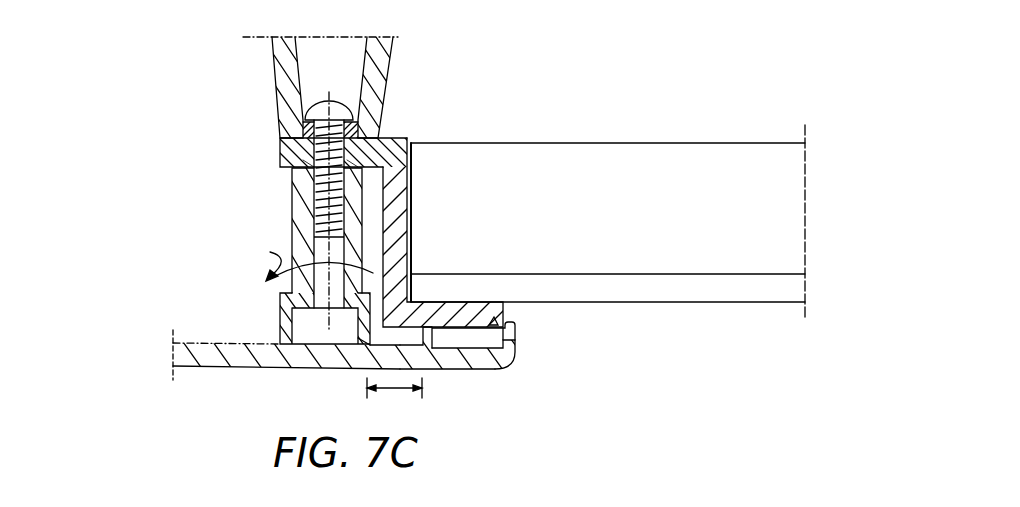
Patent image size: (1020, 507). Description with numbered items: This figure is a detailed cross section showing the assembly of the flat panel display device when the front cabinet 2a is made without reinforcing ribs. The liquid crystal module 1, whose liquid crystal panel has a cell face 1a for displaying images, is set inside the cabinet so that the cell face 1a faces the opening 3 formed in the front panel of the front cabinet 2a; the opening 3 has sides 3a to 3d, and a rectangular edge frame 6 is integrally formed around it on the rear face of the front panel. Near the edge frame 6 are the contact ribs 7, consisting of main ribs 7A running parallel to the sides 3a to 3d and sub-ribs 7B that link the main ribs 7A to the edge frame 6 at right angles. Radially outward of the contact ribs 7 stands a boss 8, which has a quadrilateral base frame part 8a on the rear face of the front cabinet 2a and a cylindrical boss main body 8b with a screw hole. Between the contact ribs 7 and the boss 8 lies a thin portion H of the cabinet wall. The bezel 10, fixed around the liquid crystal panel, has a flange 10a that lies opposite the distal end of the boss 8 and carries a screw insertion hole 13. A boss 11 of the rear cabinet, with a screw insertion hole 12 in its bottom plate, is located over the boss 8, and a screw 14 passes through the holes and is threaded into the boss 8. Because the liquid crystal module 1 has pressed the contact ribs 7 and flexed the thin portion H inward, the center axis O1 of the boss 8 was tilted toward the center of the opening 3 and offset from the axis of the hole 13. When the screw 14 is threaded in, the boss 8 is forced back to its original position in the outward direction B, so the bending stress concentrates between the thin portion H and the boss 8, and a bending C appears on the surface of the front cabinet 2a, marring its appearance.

The liquid crystal module 1 is at (692, 158).
The cell face 1a is at (686, 303).
The front cabinet 2a is at (183, 353).
The opening 3 is at (580, 254).
The side of the opening 3a is at (580, 254).
The side of the opening 3d is at (506, 323).
The rectangular edge frame 6 is at (517, 338).
The contact ribs 7 is at (500, 392).
The main ribs 7A is at (432, 330).
The sub-ribs 7B is at (490, 370).
The bosses 8 is at (260, 256).
The base frame part 8a is at (280, 317).
The boss main body 8b is at (293, 200).
The bezel 10 is at (463, 310).
The flanges 10a is at (280, 150).
The bosses 11 is at (275, 66).
The screw insertion hole 12 is at (305, 129).
The screw insertion holes 13 is at (307, 160).
The screws 14 is at (327, 103).
The outward direction B is at (314, 253).
The bending C is at (368, 362).
The thin portions H is at (394, 396).
The center axes of the bosses O1 is at (330, 103).